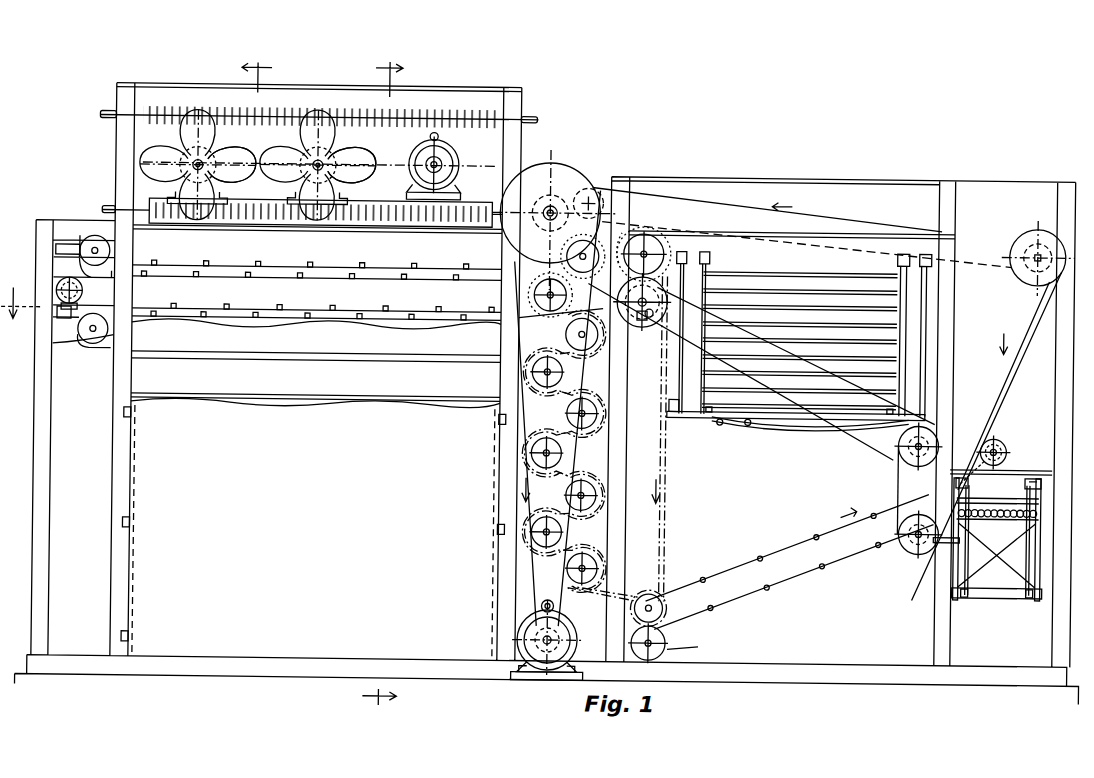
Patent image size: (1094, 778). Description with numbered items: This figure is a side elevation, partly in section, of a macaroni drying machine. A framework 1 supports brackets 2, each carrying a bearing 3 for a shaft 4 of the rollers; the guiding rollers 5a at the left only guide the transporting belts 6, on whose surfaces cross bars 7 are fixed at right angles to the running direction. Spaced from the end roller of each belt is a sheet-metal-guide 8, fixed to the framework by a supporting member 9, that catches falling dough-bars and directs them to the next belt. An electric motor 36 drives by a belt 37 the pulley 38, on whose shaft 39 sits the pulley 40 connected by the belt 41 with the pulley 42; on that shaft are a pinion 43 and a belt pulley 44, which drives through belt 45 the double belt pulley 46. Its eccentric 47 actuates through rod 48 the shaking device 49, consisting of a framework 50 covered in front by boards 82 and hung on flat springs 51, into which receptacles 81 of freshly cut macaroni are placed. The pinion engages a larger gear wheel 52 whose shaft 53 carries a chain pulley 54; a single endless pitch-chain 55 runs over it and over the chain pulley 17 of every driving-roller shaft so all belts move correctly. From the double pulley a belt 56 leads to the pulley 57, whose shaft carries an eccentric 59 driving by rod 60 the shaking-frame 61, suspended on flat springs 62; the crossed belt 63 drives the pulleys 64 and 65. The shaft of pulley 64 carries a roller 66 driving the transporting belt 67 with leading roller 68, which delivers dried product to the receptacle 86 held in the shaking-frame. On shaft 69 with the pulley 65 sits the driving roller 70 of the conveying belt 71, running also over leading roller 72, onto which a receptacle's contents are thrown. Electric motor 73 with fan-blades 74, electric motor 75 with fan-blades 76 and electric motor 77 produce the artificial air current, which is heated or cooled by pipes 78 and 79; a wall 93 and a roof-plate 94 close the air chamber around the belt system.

The framework 1 is at (41, 421).
The bracket 2 is at (55, 322).
The bearing 3 is at (51, 302).
The shaft 4 is at (57, 299).
The guiding rollers 5a is at (60, 291).
The transporting belt 6 is at (168, 288).
The bars 7 is at (290, 281).
The sheet-metal-guide 8 is at (74, 250).
The supporting member 9 is at (62, 254).
The chain pulley 17 is at (600, 352).
The electric motor 36 is at (529, 653).
The belt 37 is at (532, 590).
The pulley 38 is at (570, 177).
The shaft 39 is at (551, 199).
The pulley 40 is at (547, 207).
The belt 41 is at (566, 292).
The pulley 42 is at (640, 318).
The pinion 43 is at (648, 316).
The belt pulley 44 is at (629, 312).
The belt 45 is at (867, 438).
The double belt pulley 46 is at (937, 443).
The eccentric 47 is at (932, 418).
The rod 48 is at (817, 424).
The shaking device 49 is at (791, 279).
The framework 50 is at (718, 414).
The flat springs 51 is at (900, 311).
The gear wheel 52 is at (647, 223).
The shaft 53 is at (647, 240).
The chain pulley 54 is at (637, 274).
The pitch-chain 55 is at (667, 449).
The belt 56 is at (884, 490).
The pulley 57 is at (897, 543).
The eccentric 59 is at (909, 554).
The rod 60 is at (958, 545).
The shaking-frame 61 is at (1001, 535).
The flat springs 62 is at (1020, 580).
The belt 63 is at (1026, 368).
The pulley 64 is at (997, 443).
The pulley 65 is at (1055, 267).
The roller 66 is at (1000, 448).
The transporting belt 67 is at (789, 544).
The leading roller 68 is at (675, 643).
The shaft 69 is at (1048, 246).
The driving roller 70 is at (1053, 251).
The conveying belt 71 is at (846, 218).
The leading roller 72 is at (594, 189).
The electric motor 73 is at (183, 157).
The fan-blades 74 is at (238, 156).
The electric motor 75 is at (300, 156).
The fan-blades 76 is at (360, 158).
The electric motor 77 is at (420, 157).
The tubes or pipes 78 is at (145, 108).
The tubes or pipes 79 is at (150, 206).
The receptacle 81 is at (922, 546).
The boards 82 is at (796, 362).
The receptacle 86 is at (1019, 514).
The wall 93 is at (313, 533).
The roof-plate 94 is at (450, 89).